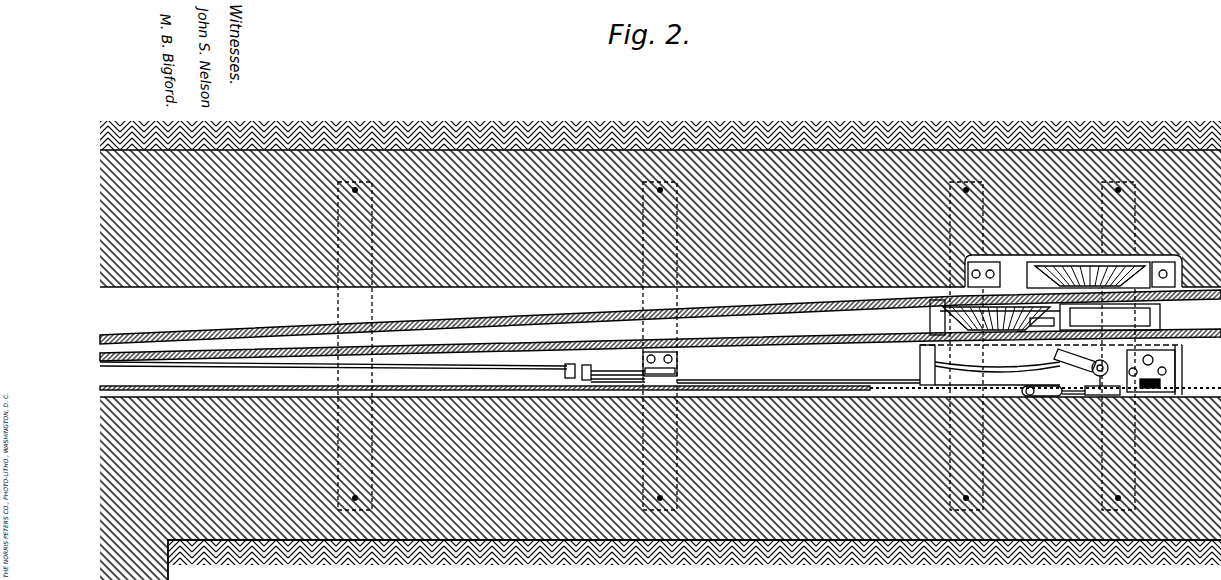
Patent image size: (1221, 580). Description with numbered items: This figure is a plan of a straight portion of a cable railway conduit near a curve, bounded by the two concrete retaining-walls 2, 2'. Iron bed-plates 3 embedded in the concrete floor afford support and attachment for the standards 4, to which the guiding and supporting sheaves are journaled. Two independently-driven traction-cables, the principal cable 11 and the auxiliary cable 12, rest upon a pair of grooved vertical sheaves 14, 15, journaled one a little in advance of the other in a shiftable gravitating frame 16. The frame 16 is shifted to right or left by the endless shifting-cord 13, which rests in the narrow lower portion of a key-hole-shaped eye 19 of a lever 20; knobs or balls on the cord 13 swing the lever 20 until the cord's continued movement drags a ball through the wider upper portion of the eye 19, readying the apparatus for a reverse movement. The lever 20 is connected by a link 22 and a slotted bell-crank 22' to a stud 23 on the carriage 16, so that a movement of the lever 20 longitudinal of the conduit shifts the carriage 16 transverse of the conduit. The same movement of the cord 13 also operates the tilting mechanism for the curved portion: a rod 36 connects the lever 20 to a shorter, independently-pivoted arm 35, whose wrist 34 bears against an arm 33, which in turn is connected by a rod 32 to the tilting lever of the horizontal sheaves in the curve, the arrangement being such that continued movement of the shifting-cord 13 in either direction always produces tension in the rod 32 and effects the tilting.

The concrete retaining-wall 2 is at (660, 218).
The concrete retaining-wall 2' is at (660, 488).
The iron bed-plate 3 is at (736, 346).
The standard 4 is at (1178, 355).
The principal traction-cable 11 is at (981, 365).
The auxiliary traction-cable 12 is at (660, 317).
The shifting-cord 13 is at (660, 379).
The grooved vertical sheave 14 is at (995, 317).
The grooved vertical sheave 15 is at (1088, 275).
The shiftable gravitating frame 16 is at (1152, 308).
The key-hole-shaped eye 19 is at (1030, 397).
The lever 20 is at (1078, 397).
The link 22 is at (1102, 402).
The slotted bell-crank 22' is at (1081, 356).
The stud 23 is at (1043, 324).
The rod 32 is at (660, 357).
The arm 33 is at (565, 376).
The wrist 34 is at (611, 365).
The shorter independently-pivoted arm 35 is at (644, 362).
The rod 36 is at (798, 373).